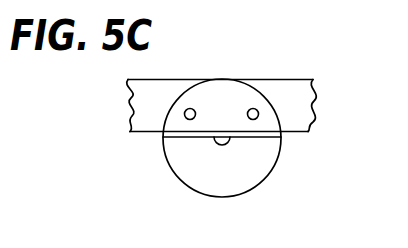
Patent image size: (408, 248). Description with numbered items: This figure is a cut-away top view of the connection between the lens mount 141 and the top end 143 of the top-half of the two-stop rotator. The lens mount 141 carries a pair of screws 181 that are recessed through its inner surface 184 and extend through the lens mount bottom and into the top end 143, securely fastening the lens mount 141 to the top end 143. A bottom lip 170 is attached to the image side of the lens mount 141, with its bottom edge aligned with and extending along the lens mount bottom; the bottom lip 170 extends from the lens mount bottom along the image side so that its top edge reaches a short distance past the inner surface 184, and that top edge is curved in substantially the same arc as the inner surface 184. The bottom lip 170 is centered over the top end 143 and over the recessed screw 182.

The lens mount 141 is at (297, 79).
The inner surface 184 is at (302, 98).
The top end 143 is at (210, 162).
The bottom lip 170 is at (268, 137).
The screws 181 is at (249, 109).
The recessed screw 182 is at (223, 145).